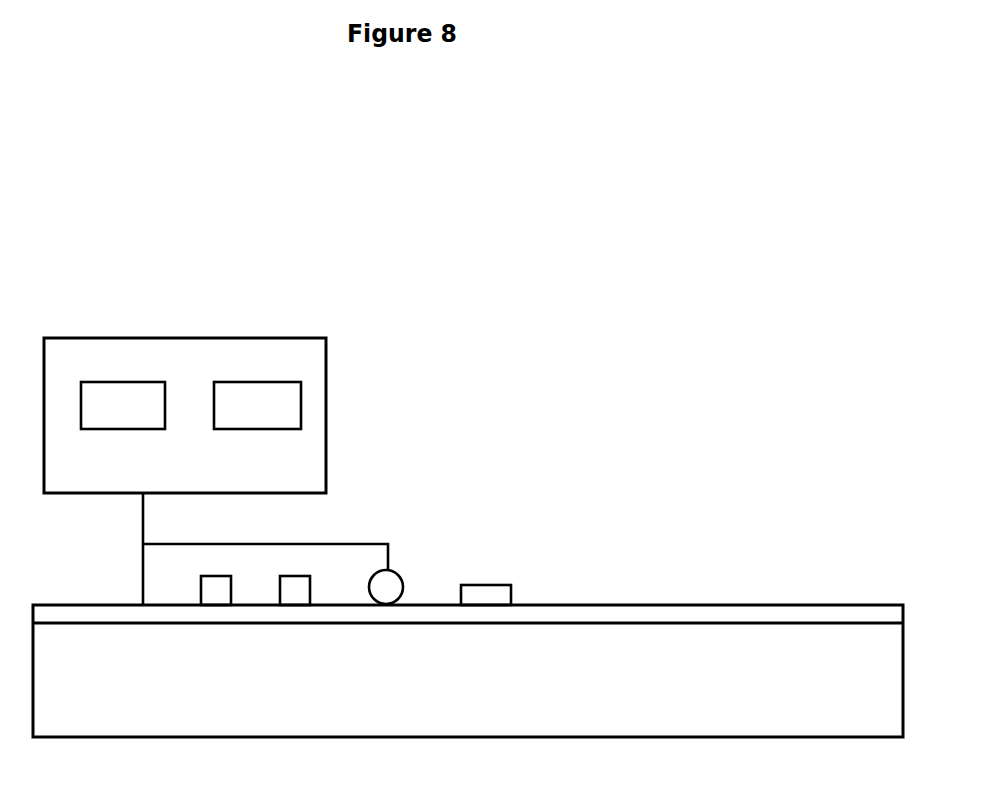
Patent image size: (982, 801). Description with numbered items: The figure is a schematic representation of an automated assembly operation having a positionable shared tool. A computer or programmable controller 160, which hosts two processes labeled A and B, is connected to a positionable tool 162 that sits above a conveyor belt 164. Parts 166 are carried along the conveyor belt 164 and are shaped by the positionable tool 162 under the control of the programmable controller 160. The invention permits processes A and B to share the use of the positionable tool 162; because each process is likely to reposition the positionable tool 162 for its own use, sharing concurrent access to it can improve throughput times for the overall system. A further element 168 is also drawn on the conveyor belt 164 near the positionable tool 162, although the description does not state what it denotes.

The programmable controller 160 is at (328, 335).
The positionable tool 162 is at (405, 583).
The conveyor belt 164 is at (620, 605).
The parts 166 is at (198, 592).
The sample element 168 is at (507, 582).